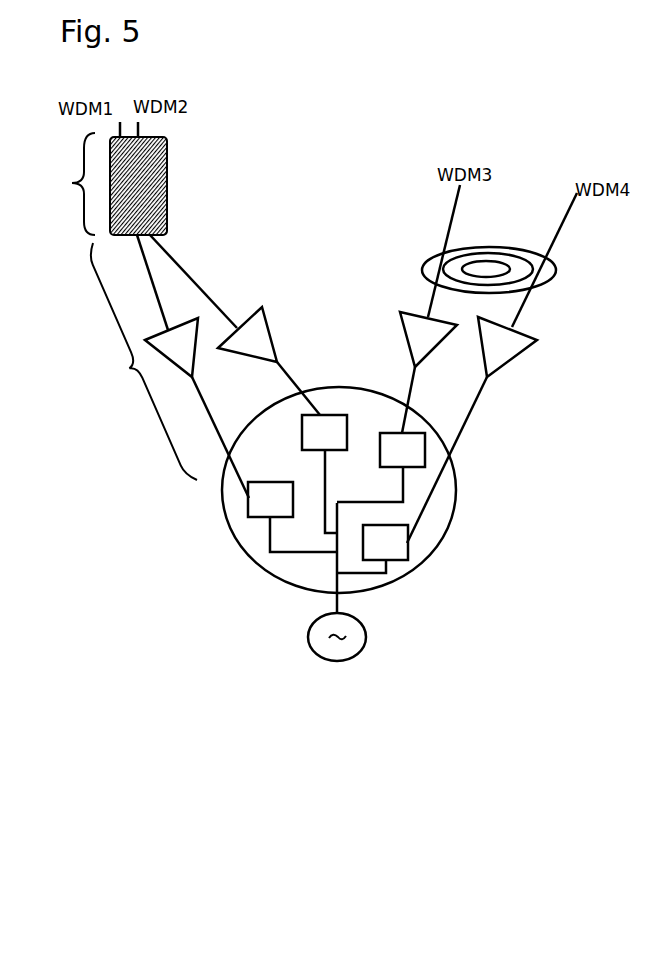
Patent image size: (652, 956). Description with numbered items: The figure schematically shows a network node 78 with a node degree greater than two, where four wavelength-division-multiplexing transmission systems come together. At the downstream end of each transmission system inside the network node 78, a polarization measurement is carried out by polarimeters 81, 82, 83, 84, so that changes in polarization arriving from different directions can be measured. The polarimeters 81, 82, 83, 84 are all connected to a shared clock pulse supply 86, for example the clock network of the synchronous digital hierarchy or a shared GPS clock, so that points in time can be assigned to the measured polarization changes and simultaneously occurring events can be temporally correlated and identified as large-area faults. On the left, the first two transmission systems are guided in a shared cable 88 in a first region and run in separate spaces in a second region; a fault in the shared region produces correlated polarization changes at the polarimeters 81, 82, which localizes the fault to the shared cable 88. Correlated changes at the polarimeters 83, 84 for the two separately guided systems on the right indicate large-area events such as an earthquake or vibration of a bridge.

The network node 78 is at (343, 387).
The polarimeter 81 is at (276, 478).
The polarimeter 82 is at (345, 412).
The polarimeter 83 is at (385, 432).
The polarimeter 84 is at (405, 525).
The shared clock pulse supply 86 is at (366, 637).
The shared cable 88 is at (167, 185).